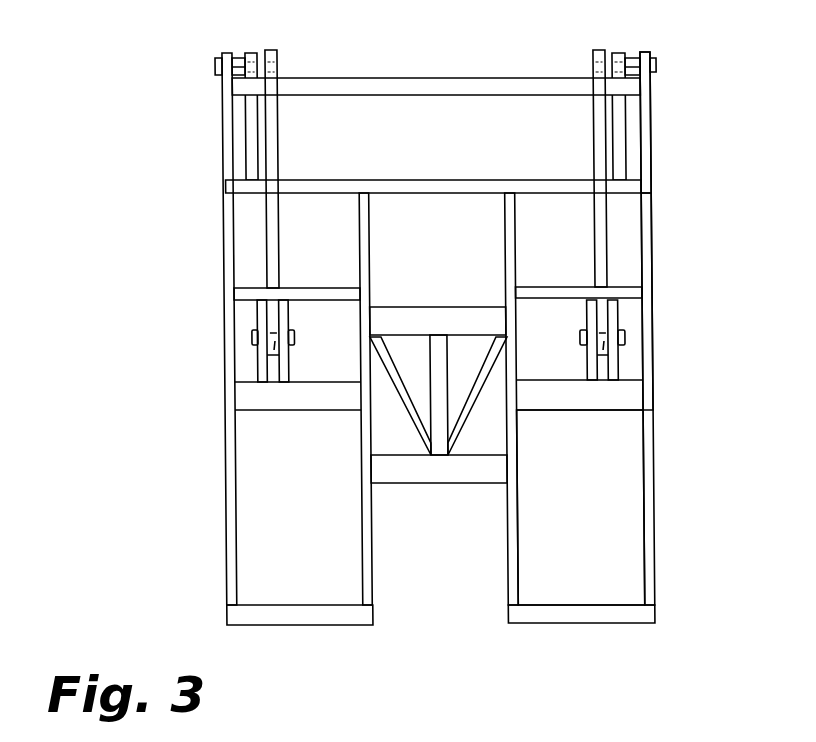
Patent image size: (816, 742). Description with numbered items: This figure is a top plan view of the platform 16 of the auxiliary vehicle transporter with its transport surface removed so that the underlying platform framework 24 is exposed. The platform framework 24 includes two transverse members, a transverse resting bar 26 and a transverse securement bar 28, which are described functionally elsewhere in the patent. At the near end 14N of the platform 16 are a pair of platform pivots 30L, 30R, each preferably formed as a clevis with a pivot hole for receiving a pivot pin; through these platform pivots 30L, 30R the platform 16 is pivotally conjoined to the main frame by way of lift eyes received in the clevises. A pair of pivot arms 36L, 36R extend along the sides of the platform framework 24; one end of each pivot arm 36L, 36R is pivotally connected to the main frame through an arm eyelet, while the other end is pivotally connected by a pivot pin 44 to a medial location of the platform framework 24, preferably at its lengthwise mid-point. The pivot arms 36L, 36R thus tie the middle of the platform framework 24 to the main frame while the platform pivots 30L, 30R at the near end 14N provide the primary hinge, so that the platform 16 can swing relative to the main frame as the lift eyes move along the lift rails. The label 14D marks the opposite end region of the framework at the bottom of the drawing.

The platform pivot 30L is at (238, 52).
The platform pivot 30R is at (633, 52).
The near end 14N is at (645, 52).
The pivot arm 36L is at (277, 133).
The pivot arm 36R is at (597, 140).
The transverse securement bar 28 is at (412, 307).
The transverse resting bar 26 is at (452, 483).
The pivot pin 44 is at (268, 347).
The platform 16 is at (662, 334).
The platform framework 24 is at (659, 503).
The frame bottom beam 14D is at (620, 623).